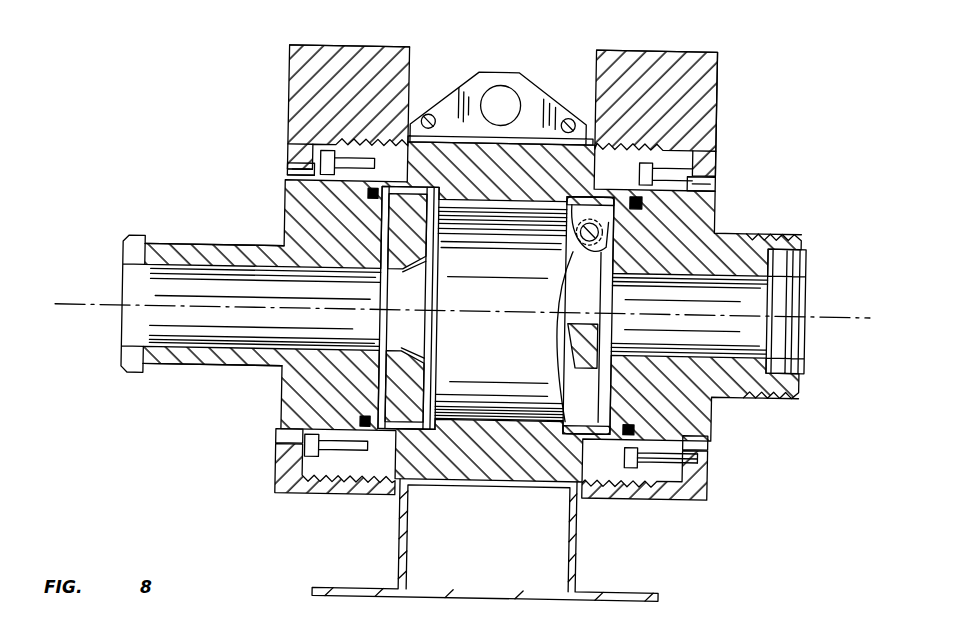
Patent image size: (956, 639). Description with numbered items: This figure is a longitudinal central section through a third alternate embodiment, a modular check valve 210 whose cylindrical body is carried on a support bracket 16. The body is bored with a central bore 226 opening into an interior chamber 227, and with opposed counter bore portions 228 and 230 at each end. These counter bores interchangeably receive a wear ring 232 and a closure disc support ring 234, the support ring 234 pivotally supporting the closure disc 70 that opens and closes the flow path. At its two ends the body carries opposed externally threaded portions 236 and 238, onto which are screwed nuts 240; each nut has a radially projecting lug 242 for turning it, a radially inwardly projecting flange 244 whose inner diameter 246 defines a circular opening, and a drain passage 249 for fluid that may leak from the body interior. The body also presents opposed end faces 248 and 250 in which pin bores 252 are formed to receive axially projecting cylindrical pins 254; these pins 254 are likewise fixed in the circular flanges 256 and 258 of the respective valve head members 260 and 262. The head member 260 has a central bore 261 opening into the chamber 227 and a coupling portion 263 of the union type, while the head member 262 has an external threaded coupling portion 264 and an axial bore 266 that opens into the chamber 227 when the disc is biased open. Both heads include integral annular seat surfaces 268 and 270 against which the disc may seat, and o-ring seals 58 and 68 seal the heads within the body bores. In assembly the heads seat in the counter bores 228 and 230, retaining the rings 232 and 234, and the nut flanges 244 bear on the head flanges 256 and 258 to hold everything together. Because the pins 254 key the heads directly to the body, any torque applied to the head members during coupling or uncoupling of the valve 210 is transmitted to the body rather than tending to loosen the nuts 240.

The support bracket 16 is at (501, 72).
The o-ring type seal member 58 is at (632, 433).
The o-ring seal 68 is at (352, 422).
The closure disc 70 is at (568, 275).
The modular check valve 210 is at (718, 78).
The central bore 226 is at (468, 412).
The interior chamber 227 is at (486, 340).
The counter bore portion 228 is at (386, 428).
The counter bore portion 230 is at (571, 485).
The wear ring 232 is at (428, 187).
The closure disc support ring 234 is at (572, 192).
The externally threaded portion 236 is at (353, 130).
The externally threaded portion 238 is at (626, 185).
The nut 240 is at (285, 148).
The radially projecting lug 242 is at (283, 70).
The radially inwardly projecting flange 244 is at (298, 168).
The inner diameter 246 is at (293, 184).
The end face 248 is at (318, 158).
The drain passage 249 is at (333, 484).
The end face 250 is at (636, 494).
The pin bore 252 is at (374, 170).
The cylindrical pin 254 is at (364, 194).
The circular flange 256 is at (296, 146).
The circular flange 258 is at (676, 474).
The valve head member 260 is at (283, 240).
The central bore 261 is at (148, 279).
The valve head member 262 is at (716, 212).
The coupling portion 263 is at (168, 375).
The external threaded coupling portion 264 is at (802, 232).
The axial bore 266 is at (804, 292).
The annular seat surface 268 is at (424, 266).
The annular seat surface 270 is at (600, 350).